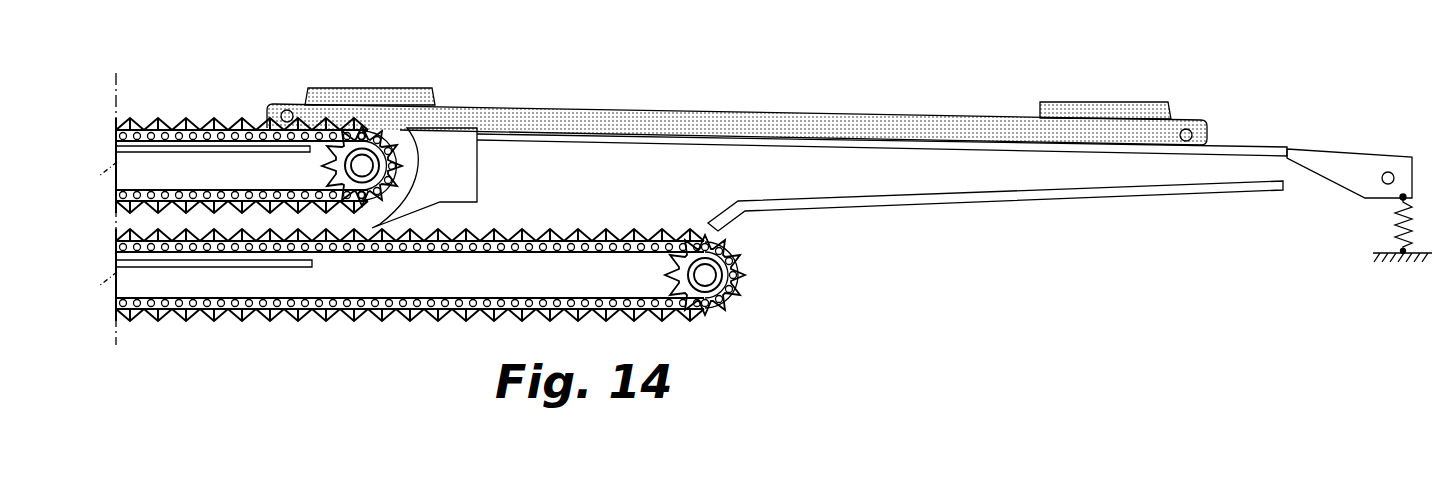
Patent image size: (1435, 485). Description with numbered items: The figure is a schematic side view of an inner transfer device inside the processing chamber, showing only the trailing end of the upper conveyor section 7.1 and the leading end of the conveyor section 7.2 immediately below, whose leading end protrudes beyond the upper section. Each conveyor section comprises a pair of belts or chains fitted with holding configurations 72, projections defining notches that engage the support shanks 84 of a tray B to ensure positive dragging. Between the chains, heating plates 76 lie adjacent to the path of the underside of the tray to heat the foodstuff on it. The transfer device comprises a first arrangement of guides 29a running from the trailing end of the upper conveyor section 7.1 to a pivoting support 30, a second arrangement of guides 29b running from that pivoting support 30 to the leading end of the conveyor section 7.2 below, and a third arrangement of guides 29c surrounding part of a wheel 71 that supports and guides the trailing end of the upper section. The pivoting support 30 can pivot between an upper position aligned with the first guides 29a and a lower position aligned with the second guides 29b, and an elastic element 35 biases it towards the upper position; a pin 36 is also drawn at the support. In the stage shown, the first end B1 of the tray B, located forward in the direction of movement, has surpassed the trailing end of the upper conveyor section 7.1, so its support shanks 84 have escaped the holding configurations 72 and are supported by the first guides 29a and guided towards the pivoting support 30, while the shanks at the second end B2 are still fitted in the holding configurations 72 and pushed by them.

The heating plates 76 is at (178, 150).
The upper conveyor section 7.1 is at (245, 127).
The conveyor section immediately below 7.2 is at (227, 253).
The wheel 71 is at (333, 169).
The holding configurations 72 is at (378, 320).
The support shanks 84 is at (291, 110).
The tray B is at (688, 118).
The first end of tray B1 is at (1103, 74).
The second end of tray B2 is at (416, 72).
The first arrangement of guides 29a is at (872, 148).
The second arrangement of guides 29b is at (932, 200).
The third arrangement of guides 29c is at (420, 163).
The pivoting support 30 is at (1338, 160).
The elastic element 35 is at (1395, 225).
The pivot 36 is at (1390, 172).